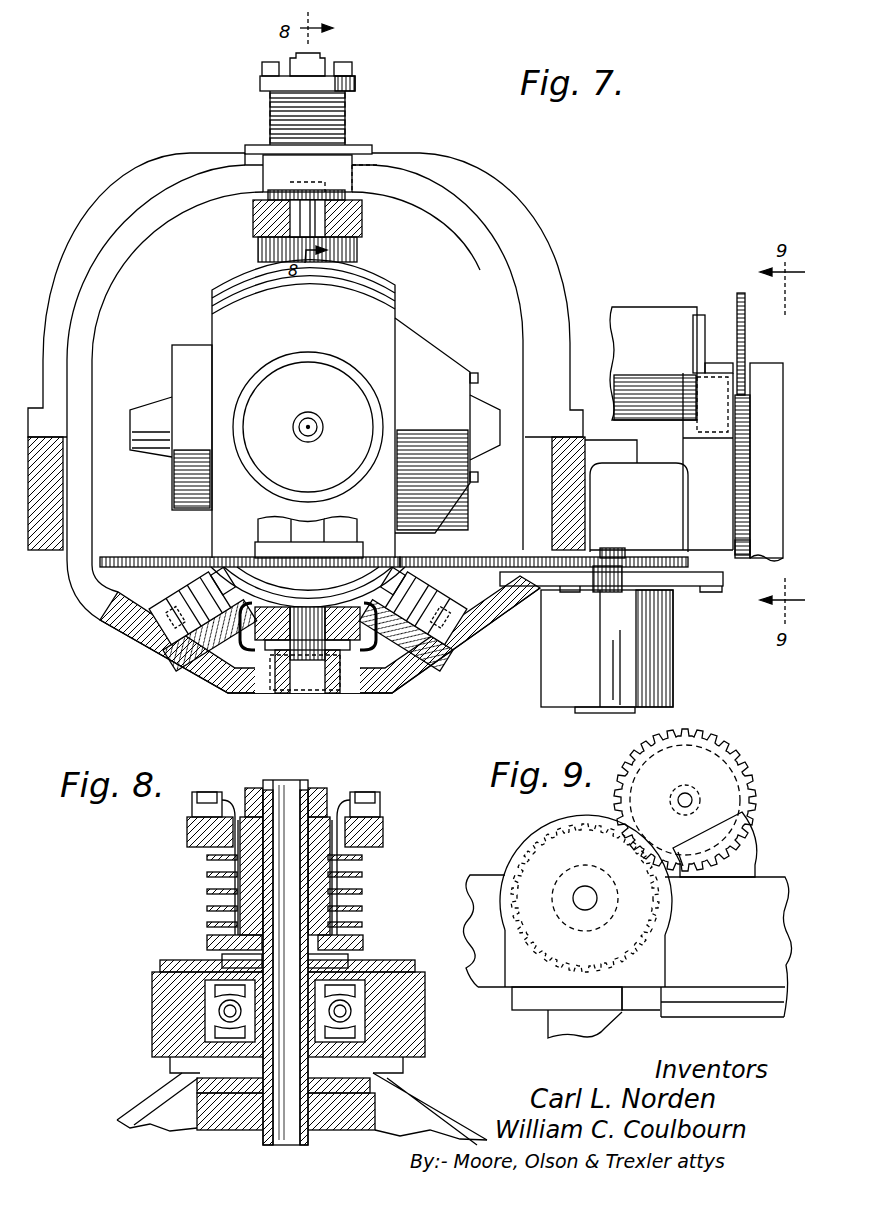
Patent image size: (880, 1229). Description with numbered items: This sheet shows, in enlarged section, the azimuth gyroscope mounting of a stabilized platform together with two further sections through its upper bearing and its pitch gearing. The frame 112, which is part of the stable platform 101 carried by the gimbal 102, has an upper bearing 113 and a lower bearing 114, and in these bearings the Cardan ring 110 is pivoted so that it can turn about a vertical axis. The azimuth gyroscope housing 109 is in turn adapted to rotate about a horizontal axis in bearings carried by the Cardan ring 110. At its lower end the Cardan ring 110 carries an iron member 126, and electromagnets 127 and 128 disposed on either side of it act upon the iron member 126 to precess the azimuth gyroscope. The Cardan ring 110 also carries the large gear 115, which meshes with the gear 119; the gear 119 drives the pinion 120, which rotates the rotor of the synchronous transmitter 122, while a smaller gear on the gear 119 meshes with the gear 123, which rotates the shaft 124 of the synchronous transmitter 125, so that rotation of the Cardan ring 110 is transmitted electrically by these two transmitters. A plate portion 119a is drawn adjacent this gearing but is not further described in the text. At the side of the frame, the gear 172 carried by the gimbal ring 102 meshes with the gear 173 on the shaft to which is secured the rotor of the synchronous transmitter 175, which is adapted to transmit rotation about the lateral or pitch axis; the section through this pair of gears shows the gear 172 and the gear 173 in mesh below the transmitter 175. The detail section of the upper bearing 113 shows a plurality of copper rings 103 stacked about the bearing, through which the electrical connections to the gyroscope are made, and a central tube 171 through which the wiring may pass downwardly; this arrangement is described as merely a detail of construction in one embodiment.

In FIG. 7, the stabilized platform 101 is at (108, 618).
In FIG. 7, the gimbal 102 is at (50, 552).
In FIG. 8, the copper rings 103 is at (362, 905).
In FIG. 7, the azimuth gyroscope housing 109 is at (397, 291).
In FIG. 7, the Cardan ring 110 is at (364, 223).
In FIG. 7, the frame 112 is at (507, 231).
In FIG. 8, the frame 112 is at (426, 1027).
In FIG. 7, the upper bearing 113 is at (338, 163).
In FIG. 8, the upper bearing 113 is at (375, 985).
In FIG. 7, the lower bearing 114 is at (290, 686).
In FIG. 7, the large gear 115 is at (130, 557).
In FIG. 7, the gear 119 is at (500, 565).
In FIG. 7, the plate extension 119a is at (515, 556).
In FIG. 7, the pinion 120 is at (621, 589).
In FIG. 7, the synchronous transmitter 122 is at (541, 677).
In FIG. 7, the gear 123 is at (660, 548).
In FIG. 7, the shaft 124 is at (612, 548).
In FIG. 7, the synchronous transmitter 125 is at (668, 655).
In FIG. 7, the iron member 126 is at (247, 575).
In FIG. 7, the electromagnet 127 is at (152, 634).
In FIG. 7, the electromagnet 128 is at (398, 630).
In FIG. 8, the tube 171 is at (291, 790).
In FIG. 7, the gear 172 is at (745, 558).
In FIG. 9, the gear 172 is at (522, 858).
In FIG. 7, the gear 173 is at (738, 300).
In FIG. 9, the gear 173 is at (703, 738).
In FIG. 7, the synchronous transmitter 175 is at (648, 307).
In FIG. 9, the synchronous transmitter 175 is at (725, 766).